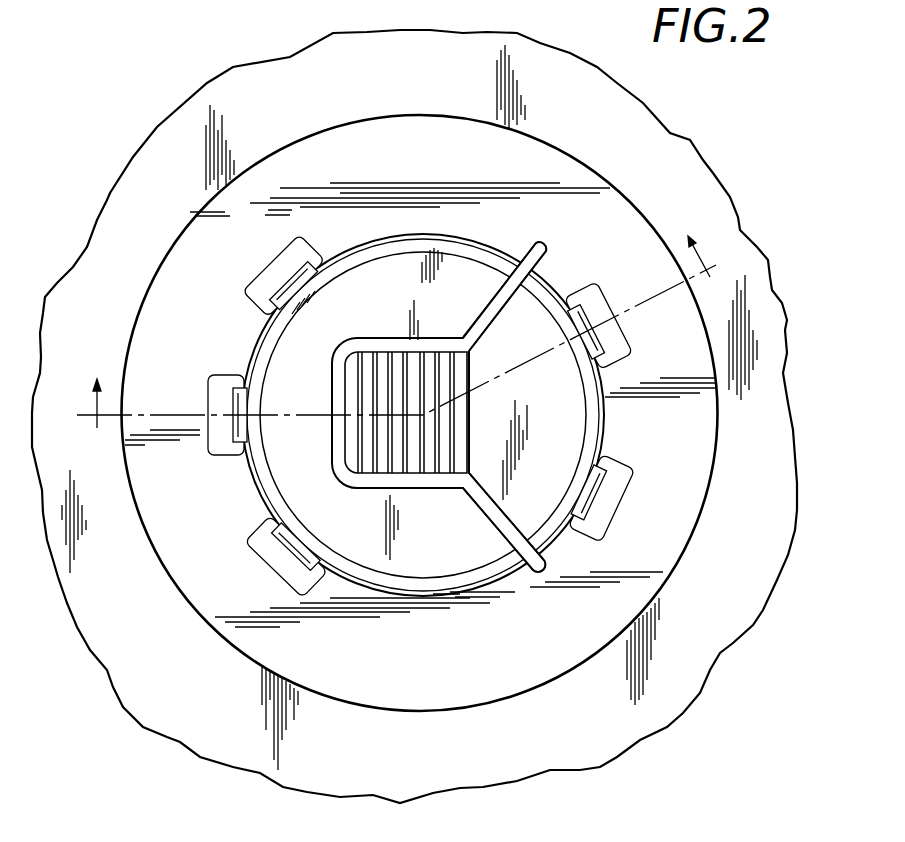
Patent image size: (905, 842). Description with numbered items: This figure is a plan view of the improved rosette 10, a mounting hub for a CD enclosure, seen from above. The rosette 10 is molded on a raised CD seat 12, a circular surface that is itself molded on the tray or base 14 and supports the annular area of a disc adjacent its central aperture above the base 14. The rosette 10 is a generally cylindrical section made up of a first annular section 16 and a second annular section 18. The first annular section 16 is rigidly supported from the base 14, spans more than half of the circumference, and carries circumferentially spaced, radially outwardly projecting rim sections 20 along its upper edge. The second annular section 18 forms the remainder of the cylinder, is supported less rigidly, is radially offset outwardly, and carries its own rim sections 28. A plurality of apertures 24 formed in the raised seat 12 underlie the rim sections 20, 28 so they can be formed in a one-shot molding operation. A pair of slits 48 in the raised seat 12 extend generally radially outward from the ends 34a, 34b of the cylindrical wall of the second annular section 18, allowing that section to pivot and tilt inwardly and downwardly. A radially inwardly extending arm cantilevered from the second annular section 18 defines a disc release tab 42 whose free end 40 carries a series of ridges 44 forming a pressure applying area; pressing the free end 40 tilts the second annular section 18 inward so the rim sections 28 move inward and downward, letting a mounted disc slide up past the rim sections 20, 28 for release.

The rosette 10 is at (612, 434).
The raised CD seat 12 is at (365, 659).
The base 14 is at (629, 703).
The first annular section 16 is at (252, 340).
The second annular section 18 is at (606, 400).
The rim sections 20 is at (284, 294).
The apertures 24 is at (618, 341).
The rim sections 28 is at (603, 343).
The end of cylindrical wall 34a is at (546, 268).
The end of cylindrical wall 34b is at (522, 553).
The free end 40 is at (411, 380).
The disc release tab 42 is at (535, 449).
The ridges 44 is at (389, 462).
The slits 48 is at (531, 249).